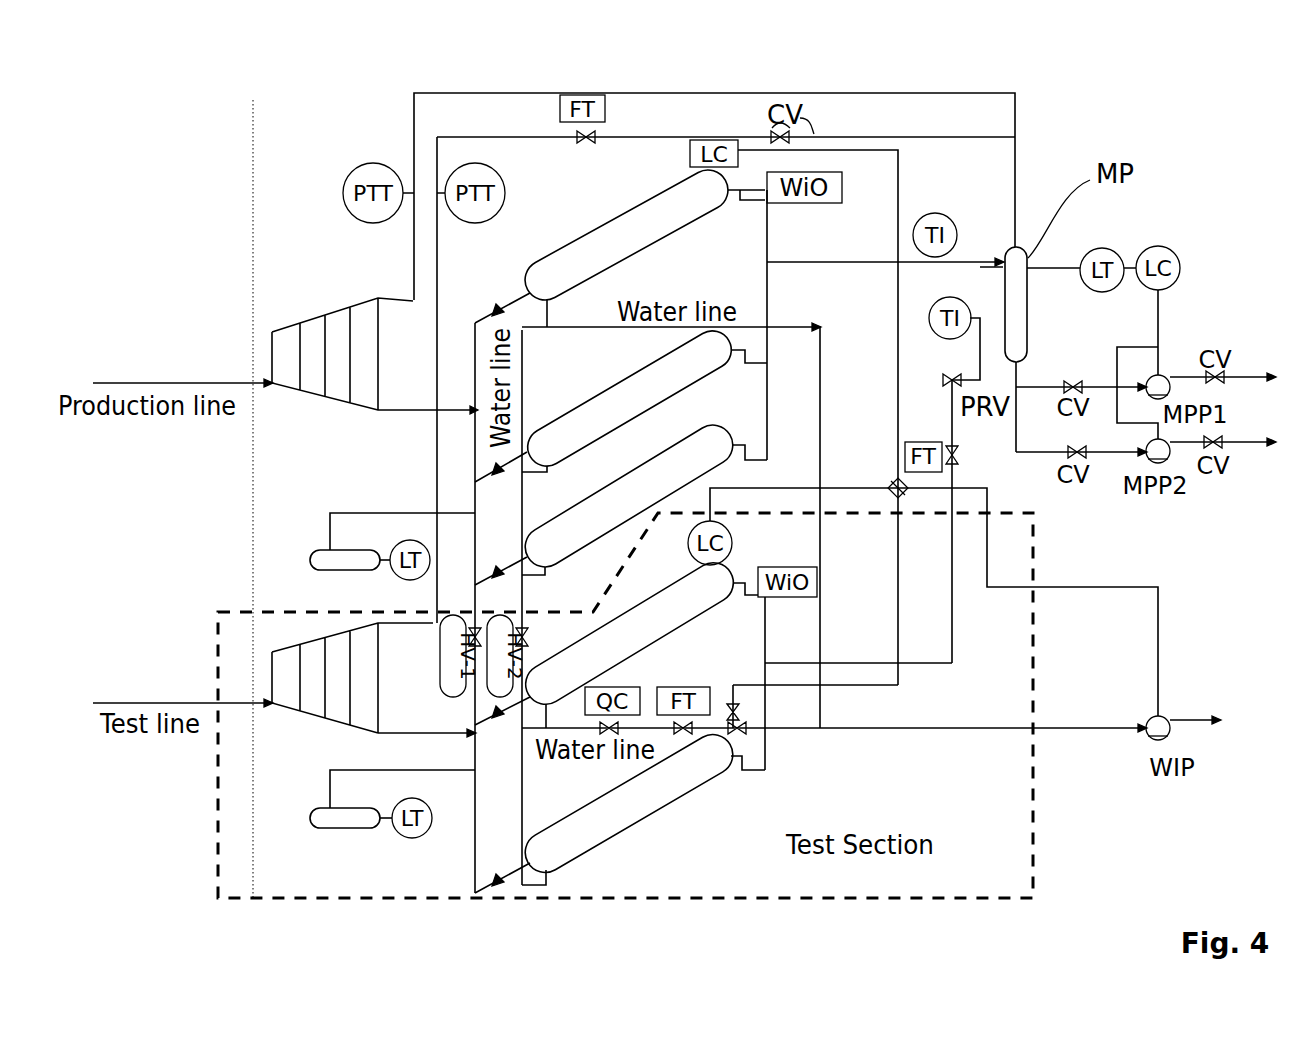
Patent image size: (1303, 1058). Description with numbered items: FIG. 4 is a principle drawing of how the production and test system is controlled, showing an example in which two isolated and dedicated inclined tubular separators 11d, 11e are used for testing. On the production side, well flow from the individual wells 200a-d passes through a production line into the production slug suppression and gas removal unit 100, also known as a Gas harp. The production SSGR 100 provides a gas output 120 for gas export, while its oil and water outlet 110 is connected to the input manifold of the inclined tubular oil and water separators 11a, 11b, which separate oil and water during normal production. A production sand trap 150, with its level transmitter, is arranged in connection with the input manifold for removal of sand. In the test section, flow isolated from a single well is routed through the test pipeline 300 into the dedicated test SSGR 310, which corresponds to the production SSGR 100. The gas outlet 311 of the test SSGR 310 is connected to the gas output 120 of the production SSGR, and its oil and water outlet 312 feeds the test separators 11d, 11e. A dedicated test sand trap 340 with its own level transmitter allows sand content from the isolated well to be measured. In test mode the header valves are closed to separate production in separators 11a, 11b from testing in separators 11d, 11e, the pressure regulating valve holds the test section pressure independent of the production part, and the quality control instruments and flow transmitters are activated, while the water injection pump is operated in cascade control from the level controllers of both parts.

The gas output 120 is at (528, 92).
The production slug suppression and gas removal unit 100 is at (308, 302).
The individual wells 200a-d is at (110, 381).
The oil and water outlet 110 is at (457, 350).
The inclined tubular oil and water separator 11a is at (637, 216).
The inclined tubular oil and water separator 11b is at (626, 383).
The inclined tubular oil and water separator 11d is at (690, 447).
The inclined tubular oil and water separator 11e is at (640, 812).
The gas outlet 311 is at (436, 468).
The production sand trap 150 is at (324, 540).
The dedicated test SSGR 310 is at (278, 634).
The test pipeline 300 is at (150, 702).
The oil and water outlet 312 is at (400, 735).
The dedicated test sand trap 340 is at (349, 845).